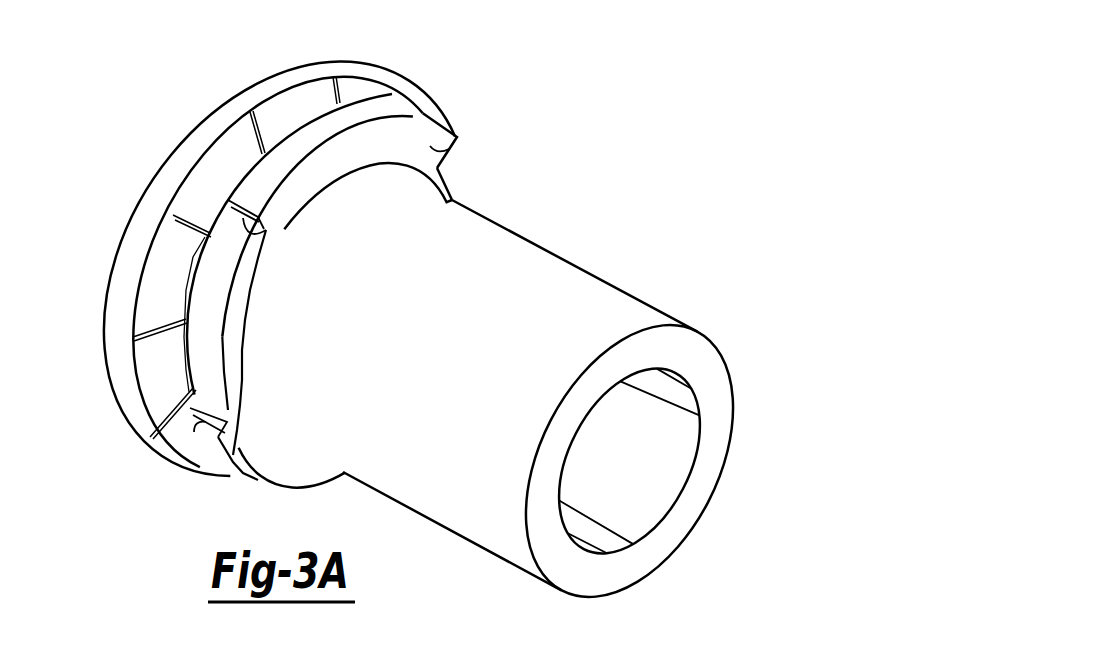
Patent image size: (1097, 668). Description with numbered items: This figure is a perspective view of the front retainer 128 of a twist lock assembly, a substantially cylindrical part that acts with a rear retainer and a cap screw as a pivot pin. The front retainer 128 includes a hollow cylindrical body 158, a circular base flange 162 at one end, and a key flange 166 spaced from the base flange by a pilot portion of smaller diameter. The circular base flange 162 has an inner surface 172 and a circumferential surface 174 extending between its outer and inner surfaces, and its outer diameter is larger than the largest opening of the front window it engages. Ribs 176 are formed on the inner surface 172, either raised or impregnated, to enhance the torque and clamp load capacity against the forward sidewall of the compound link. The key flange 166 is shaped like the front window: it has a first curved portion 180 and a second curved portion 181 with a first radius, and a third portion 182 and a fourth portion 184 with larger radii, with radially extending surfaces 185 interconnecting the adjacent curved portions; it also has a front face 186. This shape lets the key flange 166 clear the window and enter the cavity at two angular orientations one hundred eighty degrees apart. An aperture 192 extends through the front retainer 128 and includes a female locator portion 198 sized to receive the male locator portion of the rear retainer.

The front retainer 128 is at (645, 134).
The hollow cylindrical body 158 is at (560, 260).
The circular base flange 162 is at (300, 68).
The key flange 166 is at (376, 112).
The inner surface 172 is at (222, 170).
The circumferential surface 174 is at (248, 92).
The ribs 176 is at (180, 240).
The first curved portion 180 is at (213, 300).
The second curved portion 181 is at (447, 186).
The third portion 182 is at (280, 470).
The fourth portion 184 is at (285, 200).
The radially extending surfaces 185 is at (247, 234).
The front face 186 is at (458, 138).
The aperture 192 is at (658, 460).
The female locator portion 198 is at (642, 500).